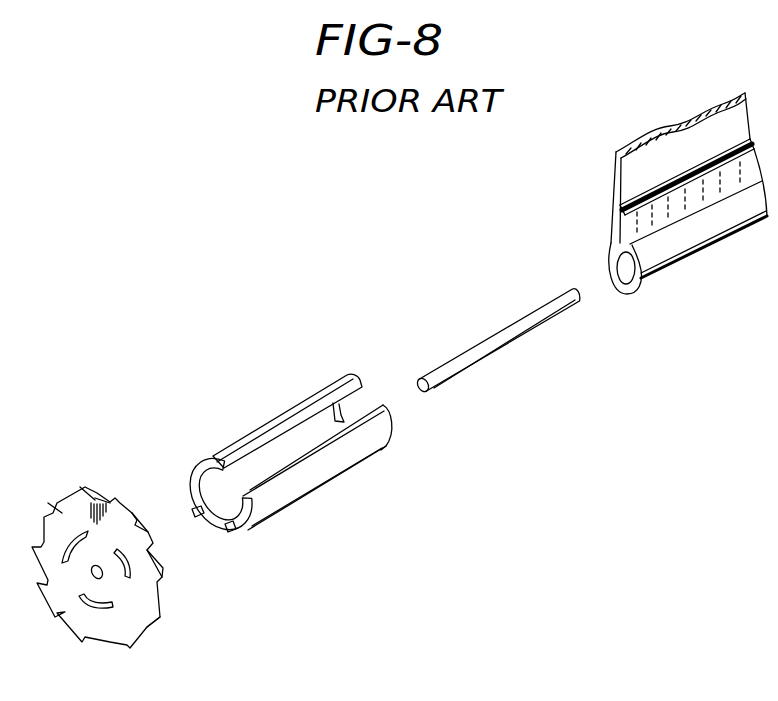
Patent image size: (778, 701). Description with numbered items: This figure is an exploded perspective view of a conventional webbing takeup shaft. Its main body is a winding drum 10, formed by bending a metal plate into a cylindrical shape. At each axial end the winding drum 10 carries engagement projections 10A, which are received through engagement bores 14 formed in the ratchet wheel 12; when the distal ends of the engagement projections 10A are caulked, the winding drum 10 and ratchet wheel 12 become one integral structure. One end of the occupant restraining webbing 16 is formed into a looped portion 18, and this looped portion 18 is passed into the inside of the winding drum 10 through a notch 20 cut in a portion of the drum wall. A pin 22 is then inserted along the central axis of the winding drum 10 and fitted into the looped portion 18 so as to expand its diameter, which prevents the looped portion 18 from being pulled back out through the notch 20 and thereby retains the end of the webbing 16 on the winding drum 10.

The winding drum 10 is at (313, 472).
The engagement projections 10A is at (390, 428).
The ratchet wheel 12 is at (142, 603).
The engagement bores 14 is at (131, 562).
The occupant restraining webbing 16 is at (632, 183).
The looped portion 18 is at (678, 252).
The notch 20 is at (259, 442).
The pin 22 is at (514, 330).